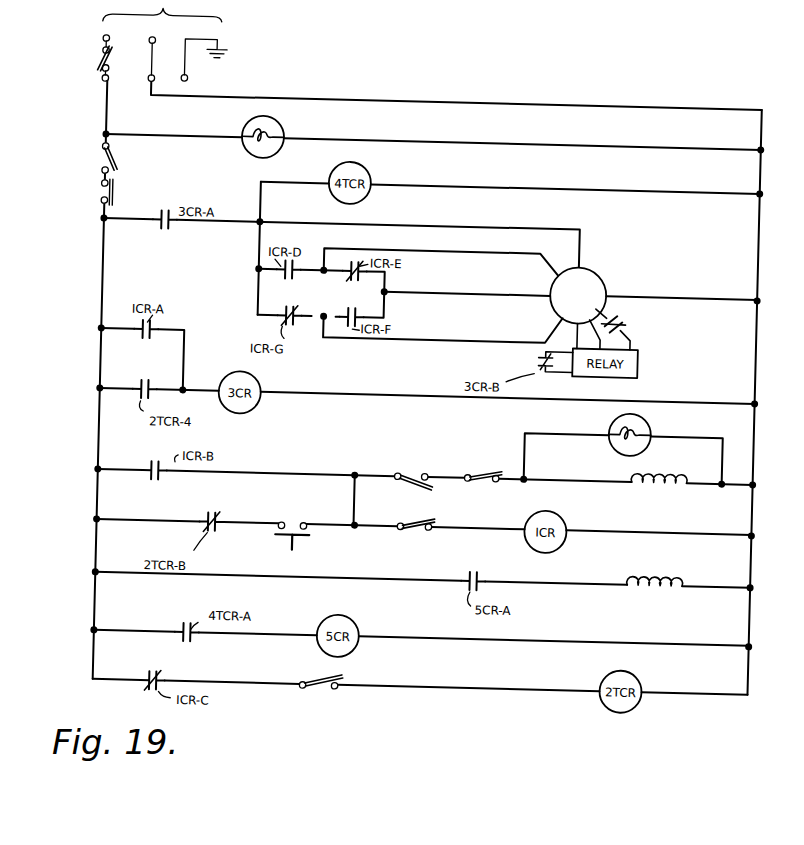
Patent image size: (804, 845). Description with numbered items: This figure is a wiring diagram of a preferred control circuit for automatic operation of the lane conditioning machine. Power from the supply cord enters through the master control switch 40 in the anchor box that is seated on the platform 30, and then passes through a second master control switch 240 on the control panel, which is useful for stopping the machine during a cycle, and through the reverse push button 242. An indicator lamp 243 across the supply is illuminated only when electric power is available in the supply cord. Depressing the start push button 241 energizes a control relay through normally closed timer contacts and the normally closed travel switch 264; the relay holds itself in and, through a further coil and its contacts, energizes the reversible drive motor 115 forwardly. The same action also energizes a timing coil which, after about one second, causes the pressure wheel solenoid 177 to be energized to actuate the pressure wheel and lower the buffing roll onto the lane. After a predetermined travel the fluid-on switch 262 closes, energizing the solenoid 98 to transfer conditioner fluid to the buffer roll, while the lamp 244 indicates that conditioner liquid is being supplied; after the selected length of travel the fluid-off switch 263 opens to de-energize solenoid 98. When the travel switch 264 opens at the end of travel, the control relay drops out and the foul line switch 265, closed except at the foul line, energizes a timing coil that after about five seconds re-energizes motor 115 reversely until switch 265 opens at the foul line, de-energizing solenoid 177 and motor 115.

The platform 30 is at (160, 7).
The switch 40 is at (96, 62).
The second master control switch 240 is at (103, 165).
The reverse push button 242 is at (101, 203).
The indicator lamp 243 is at (282, 123).
The reversible electric motor 115 is at (603, 271).
The lamp 244 is at (652, 415).
The solenoid 98 is at (667, 474).
The fluid-on switch 262 is at (404, 485).
The fluid-off switch 263 is at (478, 478).
The travel switch 264 is at (422, 528).
The start push button 241 is at (285, 538).
The pressure wheel solenoid 177 is at (669, 578).
The foul line switch 265 is at (319, 689).